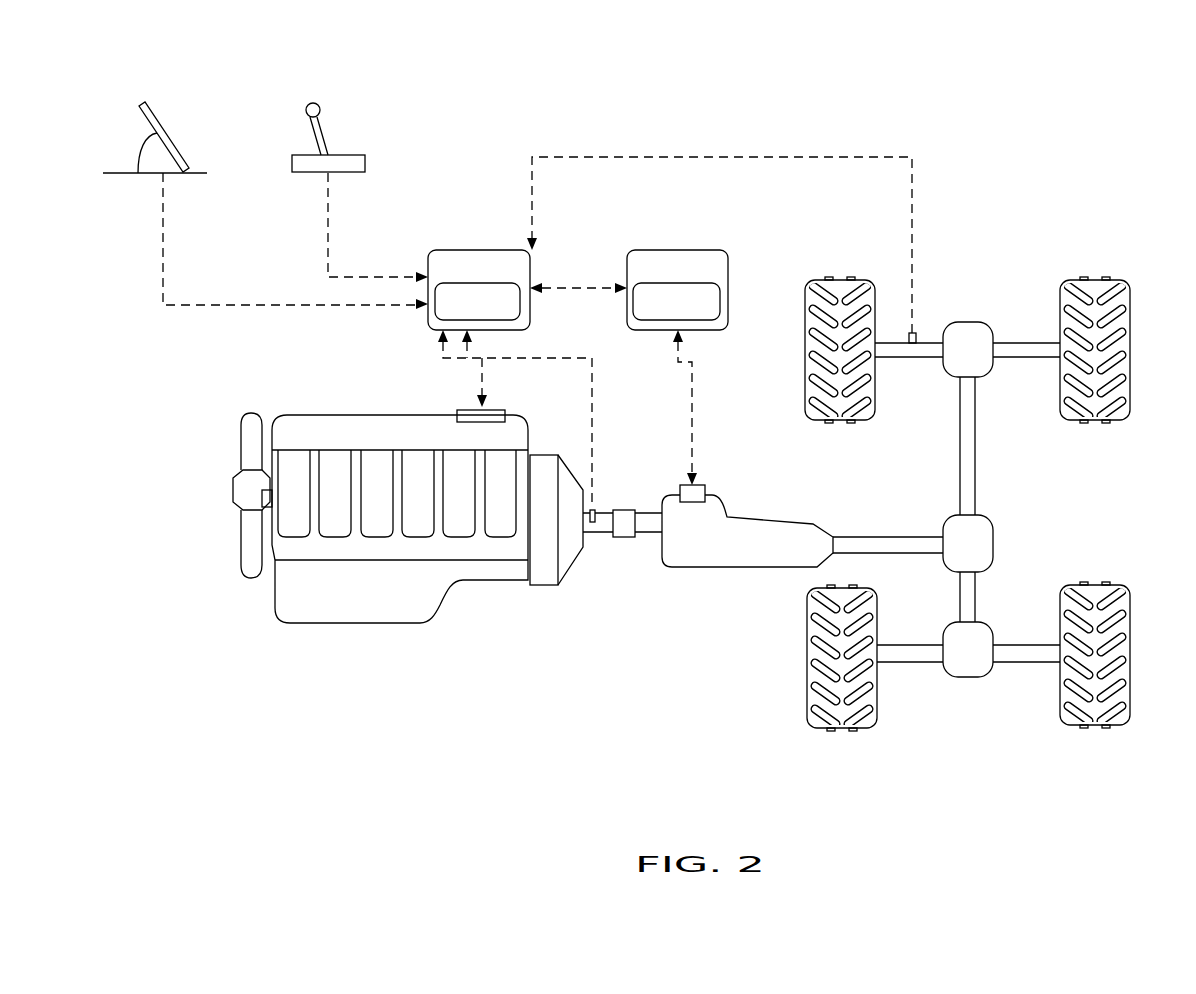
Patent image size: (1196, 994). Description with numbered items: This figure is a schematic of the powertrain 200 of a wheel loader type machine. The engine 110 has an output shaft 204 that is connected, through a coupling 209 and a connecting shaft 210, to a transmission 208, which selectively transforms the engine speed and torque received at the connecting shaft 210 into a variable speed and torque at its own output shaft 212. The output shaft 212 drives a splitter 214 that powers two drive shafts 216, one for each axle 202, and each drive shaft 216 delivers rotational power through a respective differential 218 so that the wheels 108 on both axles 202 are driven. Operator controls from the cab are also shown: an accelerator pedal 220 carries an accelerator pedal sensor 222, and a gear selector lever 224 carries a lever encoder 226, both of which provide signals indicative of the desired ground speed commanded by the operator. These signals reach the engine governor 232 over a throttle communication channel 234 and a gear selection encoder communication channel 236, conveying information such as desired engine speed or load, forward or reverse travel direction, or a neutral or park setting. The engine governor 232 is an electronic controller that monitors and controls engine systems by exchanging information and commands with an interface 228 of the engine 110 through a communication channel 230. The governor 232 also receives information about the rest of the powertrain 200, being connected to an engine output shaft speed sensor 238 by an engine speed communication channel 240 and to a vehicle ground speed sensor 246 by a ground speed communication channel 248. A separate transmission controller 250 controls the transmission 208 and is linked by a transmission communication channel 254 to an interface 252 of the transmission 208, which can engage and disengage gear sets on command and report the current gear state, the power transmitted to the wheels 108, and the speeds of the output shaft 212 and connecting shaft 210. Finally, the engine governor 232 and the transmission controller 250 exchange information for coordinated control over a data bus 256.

The powertrain 200 is at (684, 103).
The accelerator pedal 220 is at (150, 110).
The accelerator pedal sensor 222 is at (140, 152).
The gear selector lever 224 is at (315, 103).
The lever encoder 226 is at (347, 173).
The throttle communication channel 234 is at (163, 233).
The gear selection encoder communication channel 236 is at (328, 215).
The engine governor 232 is at (467, 260).
The ground speed communication channel 248 is at (763, 157).
The vehicle ground speed sensor 246 is at (908, 338).
The transmission controller 250 is at (707, 268).
The data bus 256 is at (560, 288).
The transmission communication channel 254 is at (693, 378).
The communication channel 230 is at (438, 341).
The engine speed communication channel 240 is at (592, 417).
The interface 228 is at (467, 417).
The engine 110 is at (297, 432).
The engine output shaft speed sensor 238 is at (580, 515).
The output shaft 204 is at (590, 530).
The coupling 209 is at (627, 522).
The connecting shaft 210 is at (655, 533).
The transmission 208 is at (763, 533).
The interface 252 is at (698, 495).
The output shaft 212 is at (852, 542).
The splitter 214 is at (970, 542).
The drive shaft 216 is at (967, 448).
The differential 218 is at (958, 333).
The axle 202 is at (1013, 348).
The wheels 108 is at (840, 280).